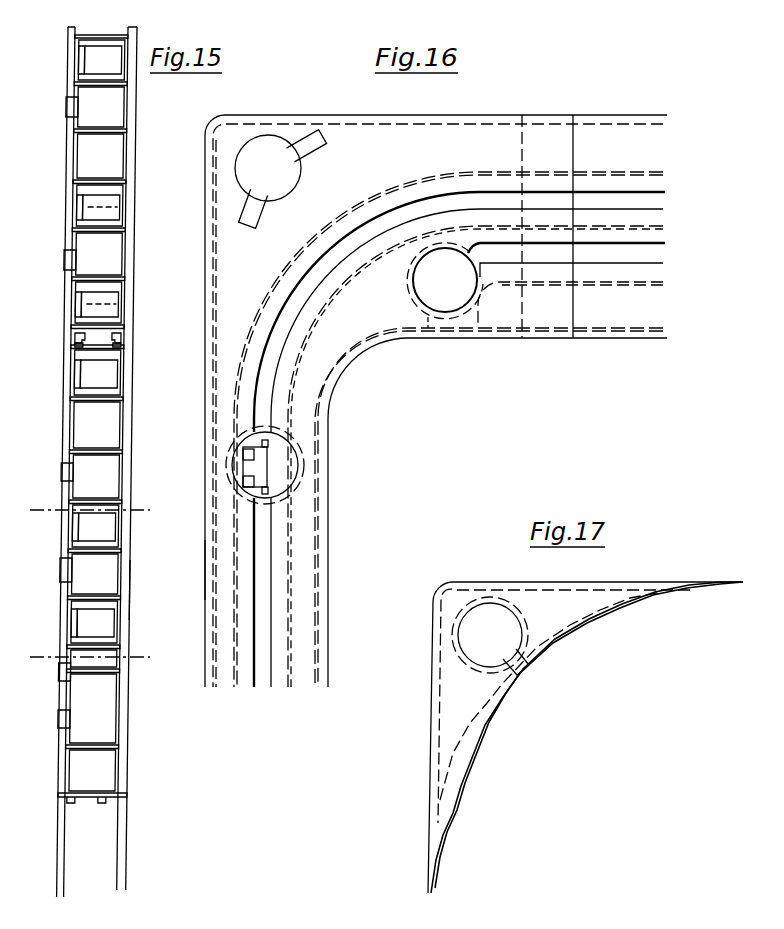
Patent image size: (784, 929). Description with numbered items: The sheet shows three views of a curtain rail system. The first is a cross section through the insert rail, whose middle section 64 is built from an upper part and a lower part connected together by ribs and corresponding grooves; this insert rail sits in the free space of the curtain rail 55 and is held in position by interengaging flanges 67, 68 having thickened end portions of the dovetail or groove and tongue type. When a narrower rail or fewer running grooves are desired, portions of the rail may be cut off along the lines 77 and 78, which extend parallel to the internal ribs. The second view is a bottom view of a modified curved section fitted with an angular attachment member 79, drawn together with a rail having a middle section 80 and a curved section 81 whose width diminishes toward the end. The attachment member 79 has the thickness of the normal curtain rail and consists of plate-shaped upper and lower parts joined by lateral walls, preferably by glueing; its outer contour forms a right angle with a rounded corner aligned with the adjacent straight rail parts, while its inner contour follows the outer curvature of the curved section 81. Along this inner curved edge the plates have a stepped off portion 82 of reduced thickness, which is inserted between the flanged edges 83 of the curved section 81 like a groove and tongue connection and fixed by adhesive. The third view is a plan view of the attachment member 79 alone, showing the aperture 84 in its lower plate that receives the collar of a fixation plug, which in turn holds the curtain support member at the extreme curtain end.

In FIG. 15, the curtain rail 55 is at (66, 132).
In FIG. 15, the middle section 64 is at (133, 585).
In FIG. 15, the interengaging flange 67 is at (82, 345).
In FIG. 15, the interengaging flange 68 is at (76, 336).
In FIG. 15, the cutting line 77 is at (87, 646).
In FIG. 15, the cutting line 78 is at (87, 499).
In FIG. 16, the angular attachment member 79 is at (255, 246).
In FIG. 16, the middle section 80 is at (623, 318).
In FIG. 16, the curved section 81 is at (368, 383).
In FIG. 17, the stepped off portion 82 is at (471, 764).
In FIG. 16, the flanged edges 83 is at (207, 547).
In FIG. 16, the aperture 84 is at (252, 157).
In FIG. 17, the aperture 84 is at (507, 635).